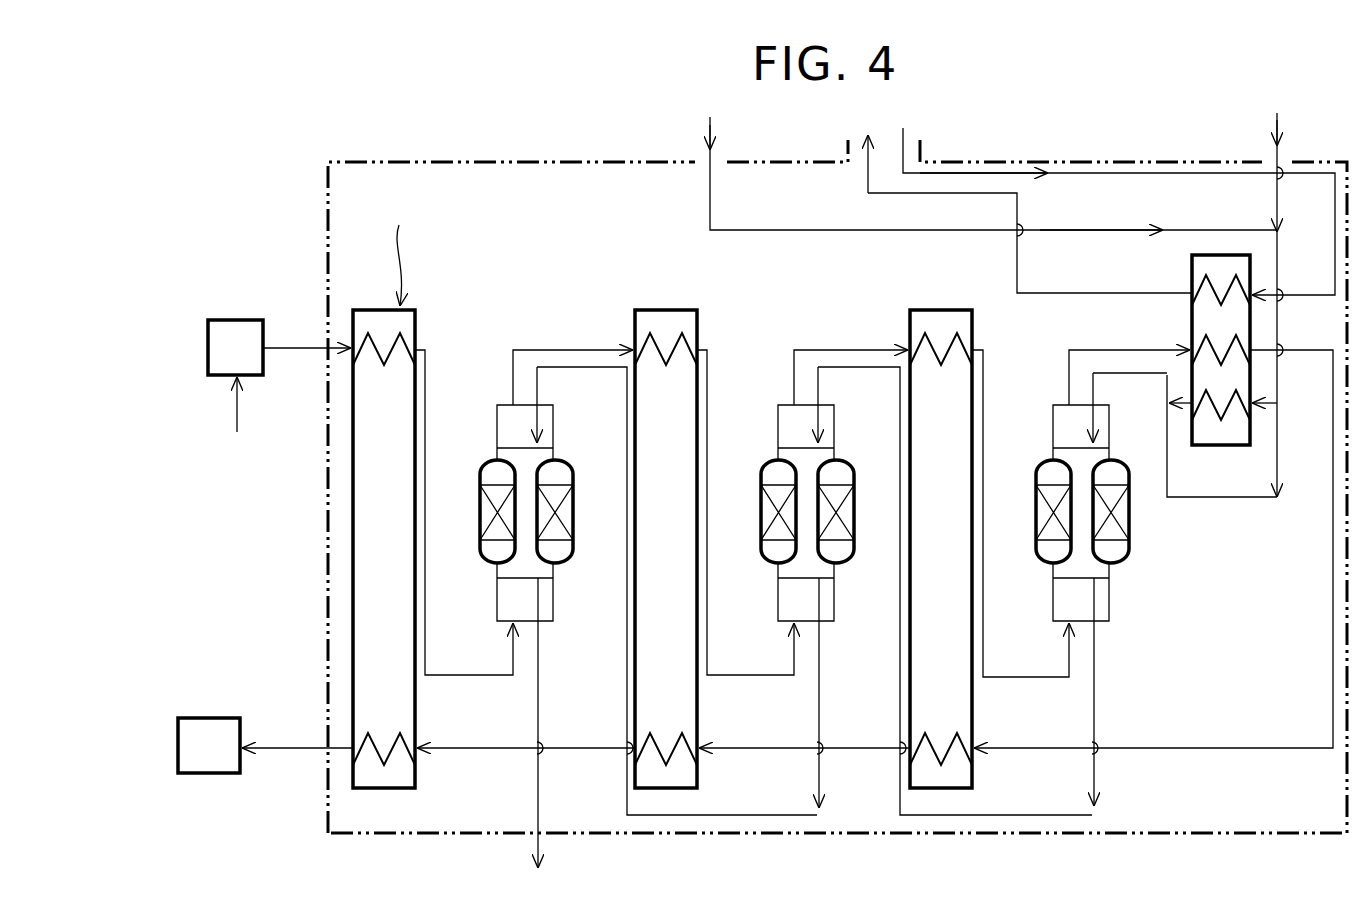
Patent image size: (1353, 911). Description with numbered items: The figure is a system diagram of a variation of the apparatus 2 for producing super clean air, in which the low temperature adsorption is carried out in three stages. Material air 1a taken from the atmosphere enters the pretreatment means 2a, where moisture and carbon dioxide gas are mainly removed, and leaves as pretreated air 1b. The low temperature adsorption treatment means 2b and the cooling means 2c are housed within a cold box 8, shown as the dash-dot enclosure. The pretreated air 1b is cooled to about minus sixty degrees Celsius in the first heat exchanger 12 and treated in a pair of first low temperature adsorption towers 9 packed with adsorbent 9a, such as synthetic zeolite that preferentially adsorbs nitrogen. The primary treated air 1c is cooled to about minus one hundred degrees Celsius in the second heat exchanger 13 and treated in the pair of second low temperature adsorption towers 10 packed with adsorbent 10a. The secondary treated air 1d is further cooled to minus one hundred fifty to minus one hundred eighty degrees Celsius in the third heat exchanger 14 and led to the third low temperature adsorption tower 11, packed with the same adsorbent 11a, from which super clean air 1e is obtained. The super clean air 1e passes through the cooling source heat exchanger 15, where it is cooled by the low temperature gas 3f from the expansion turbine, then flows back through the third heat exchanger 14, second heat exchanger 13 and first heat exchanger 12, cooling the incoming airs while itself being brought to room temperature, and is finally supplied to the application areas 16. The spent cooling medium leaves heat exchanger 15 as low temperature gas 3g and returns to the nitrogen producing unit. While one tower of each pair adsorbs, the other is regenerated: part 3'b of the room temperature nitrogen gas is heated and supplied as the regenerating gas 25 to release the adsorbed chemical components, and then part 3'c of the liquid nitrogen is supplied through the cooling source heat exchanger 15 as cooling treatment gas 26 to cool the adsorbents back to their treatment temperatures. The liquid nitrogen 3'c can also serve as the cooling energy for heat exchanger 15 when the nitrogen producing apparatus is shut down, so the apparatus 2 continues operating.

The apparatus for producing super clean air 2 is at (802, 464).
The cold box 8 is at (328, 537).
The pretreatment means 2a is at (208, 350).
The low temperature adsorption treatment means 2b is at (521, 510).
The cooling means 2c is at (399, 250).
The material air 1a is at (233, 392).
The pretreated air 1b is at (345, 347).
The primary treated air 1c is at (632, 347).
The secondary treated air 1d is at (907, 348).
The super clean air 1e is at (250, 745).
The first low temperature adsorption tower 9 is at (521, 530).
The adsorbent 9a is at (490, 520).
The second low temperature adsorption tower 10 is at (802, 513).
The adsorbent 10a is at (802, 548).
The third low temperature adsorption tower 11 is at (1089, 513).
The adsorbent 11a is at (1089, 539).
The first heat exchanger 12 is at (418, 338).
The second heat exchanger 13 is at (700, 340).
The third heat exchanger 14 is at (975, 345).
The cooling source heat exchanger 15 is at (1192, 290).
The application areas of super clean air 16 is at (215, 718).
The regenerating gas 25 is at (1165, 225).
The cooling treatment gas 26 is at (1272, 228).
The low temperature gas 3f is at (1049, 178).
The low temperature gas used as cooling medium 3g is at (871, 141).
The part of the nitrogen gas 3'b is at (836, 173).
The part of the liquid nitrogen 3'c is at (1312, 172).